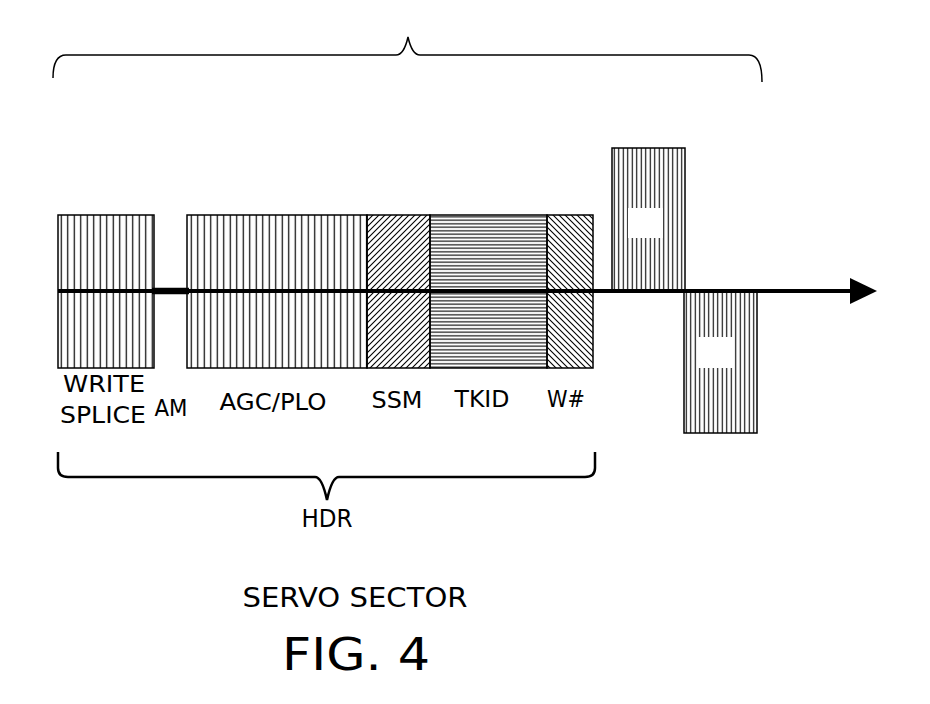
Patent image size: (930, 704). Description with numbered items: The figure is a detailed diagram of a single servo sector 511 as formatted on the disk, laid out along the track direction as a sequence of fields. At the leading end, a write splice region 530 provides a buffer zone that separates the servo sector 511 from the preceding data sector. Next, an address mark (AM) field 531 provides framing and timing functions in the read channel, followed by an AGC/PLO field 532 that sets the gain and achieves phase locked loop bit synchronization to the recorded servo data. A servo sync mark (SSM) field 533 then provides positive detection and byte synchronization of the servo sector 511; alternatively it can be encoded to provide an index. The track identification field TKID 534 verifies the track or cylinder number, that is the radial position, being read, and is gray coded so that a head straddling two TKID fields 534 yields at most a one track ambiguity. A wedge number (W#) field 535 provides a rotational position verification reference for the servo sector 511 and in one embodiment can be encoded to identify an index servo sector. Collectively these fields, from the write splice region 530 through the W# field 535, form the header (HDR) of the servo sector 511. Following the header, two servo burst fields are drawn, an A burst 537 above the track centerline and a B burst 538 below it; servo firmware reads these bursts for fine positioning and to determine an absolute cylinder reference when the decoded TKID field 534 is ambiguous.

The servo sector 511 is at (407, 42).
The write splice region 530 is at (95, 215).
The address mark (AM) field 531 is at (167, 247).
The AGC/PLO field 532 is at (266, 215).
The servo sync mark (SSM) field 533 is at (397, 215).
The track identification (TKID) field 534 is at (502, 215).
The wedge number (W#) field 535 is at (573, 215).
The A burst 537 is at (649, 148).
The B burst 538 is at (737, 433).